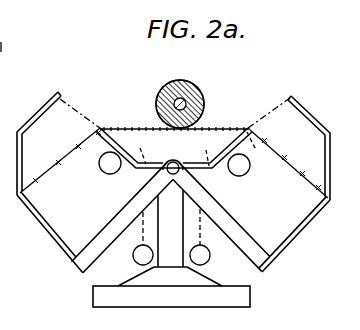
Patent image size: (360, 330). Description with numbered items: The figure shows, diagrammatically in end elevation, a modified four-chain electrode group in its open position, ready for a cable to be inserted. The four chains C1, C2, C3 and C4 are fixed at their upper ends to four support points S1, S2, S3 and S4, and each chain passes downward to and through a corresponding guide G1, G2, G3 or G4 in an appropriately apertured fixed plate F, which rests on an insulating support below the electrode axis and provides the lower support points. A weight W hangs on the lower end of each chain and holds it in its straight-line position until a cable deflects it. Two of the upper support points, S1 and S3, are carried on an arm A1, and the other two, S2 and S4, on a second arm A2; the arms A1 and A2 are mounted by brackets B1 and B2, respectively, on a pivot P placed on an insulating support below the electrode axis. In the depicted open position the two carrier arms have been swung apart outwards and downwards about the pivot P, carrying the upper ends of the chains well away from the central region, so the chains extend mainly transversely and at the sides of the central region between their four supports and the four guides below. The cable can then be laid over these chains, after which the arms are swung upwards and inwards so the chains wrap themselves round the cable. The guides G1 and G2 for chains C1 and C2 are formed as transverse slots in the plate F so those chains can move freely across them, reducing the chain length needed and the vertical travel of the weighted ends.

The fixed plate F is at (157, 165).
The pivot P is at (173, 180).
The bracket B1 is at (244, 237).
The bracket B2 is at (94, 237).
The arm A1 is at (333, 165).
The arm A2 is at (22, 130).
The support point S1 is at (290, 99).
The support point S2 is at (61, 95).
The support point S3 is at (328, 201).
The support point S4 is at (41, 231).
The chain C1 is at (269, 116).
The chain C2 is at (77, 118).
The chain C3 is at (297, 172).
The chain C4 is at (41, 177).
The guide G1 is at (208, 151).
The guide G2 is at (146, 150).
The guide G3 is at (100, 132).
The guide G4 is at (252, 154).
The weight W is at (109, 174).